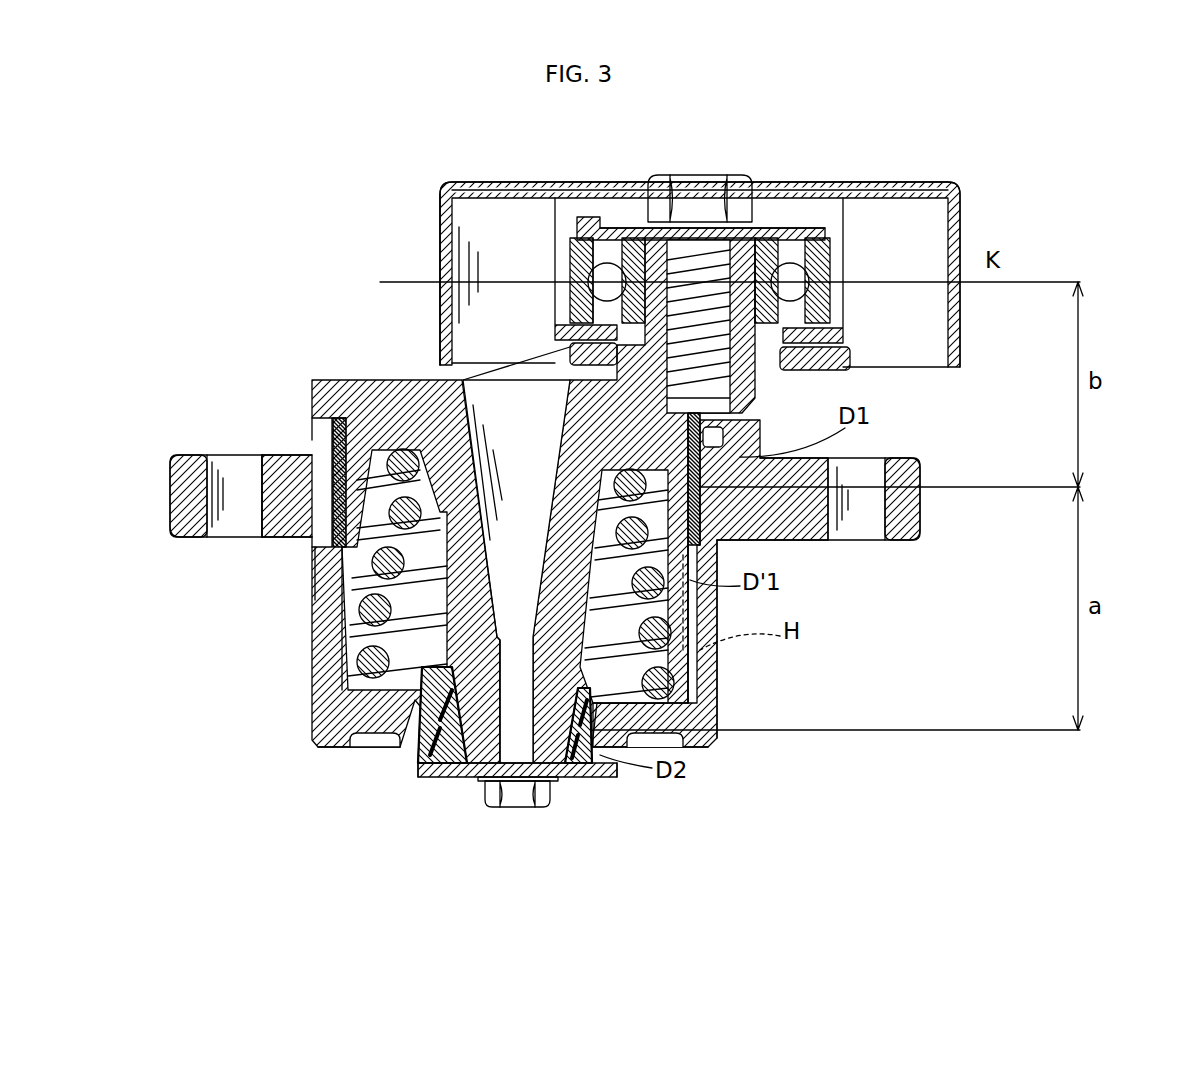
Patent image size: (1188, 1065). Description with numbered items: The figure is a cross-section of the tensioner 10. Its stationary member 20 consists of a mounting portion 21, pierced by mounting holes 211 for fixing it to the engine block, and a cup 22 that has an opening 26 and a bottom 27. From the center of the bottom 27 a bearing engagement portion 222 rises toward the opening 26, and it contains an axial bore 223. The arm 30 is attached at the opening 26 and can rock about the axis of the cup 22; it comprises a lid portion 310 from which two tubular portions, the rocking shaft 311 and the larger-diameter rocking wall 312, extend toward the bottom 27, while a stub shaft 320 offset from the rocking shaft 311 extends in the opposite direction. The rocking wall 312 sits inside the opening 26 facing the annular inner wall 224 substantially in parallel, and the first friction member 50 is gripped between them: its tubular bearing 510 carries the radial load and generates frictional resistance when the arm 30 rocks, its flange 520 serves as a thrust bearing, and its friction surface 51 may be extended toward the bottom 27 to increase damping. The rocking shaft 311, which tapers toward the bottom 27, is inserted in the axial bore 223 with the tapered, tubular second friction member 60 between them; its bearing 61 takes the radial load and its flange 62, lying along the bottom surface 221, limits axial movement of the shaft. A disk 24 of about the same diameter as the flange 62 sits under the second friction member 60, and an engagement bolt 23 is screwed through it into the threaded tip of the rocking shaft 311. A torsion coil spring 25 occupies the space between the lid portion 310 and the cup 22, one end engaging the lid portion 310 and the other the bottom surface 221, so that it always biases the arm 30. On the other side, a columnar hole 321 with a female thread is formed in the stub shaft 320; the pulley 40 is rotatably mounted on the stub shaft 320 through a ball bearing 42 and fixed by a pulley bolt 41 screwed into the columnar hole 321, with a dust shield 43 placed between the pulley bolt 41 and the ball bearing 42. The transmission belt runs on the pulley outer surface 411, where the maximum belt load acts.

The tensioner 10 is at (262, 186).
The stationary member 20 is at (733, 660).
The mounting portion 21 is at (810, 557).
The mounting holes 211 is at (207, 520).
The cup 22 is at (722, 751).
The bottom surface 221 is at (340, 720).
The bearing engagement portion 222 is at (400, 690).
The axial bore 223 is at (440, 780).
The annular inner wall 224 is at (345, 565).
The engagement bolt 23 is at (508, 822).
The disk 24 is at (620, 772).
The torsion coil spring 25 is at (688, 628).
The opening 26 is at (725, 460).
The bottom 27 is at (655, 725).
The arm 30 is at (315, 378).
The lid portion 310 is at (410, 378).
The rocking shaft 311 is at (465, 382).
The rocking wall 312 is at (340, 418).
The stub shaft 320 is at (822, 362).
The columnar hole 321 is at (722, 290).
The pulley 40 is at (930, 178).
The pulley bolt 41 is at (700, 190).
The pulley outer surface 411 is at (442, 240).
The ball bearing 42 is at (840, 300).
The dust shield 43 is at (592, 223).
The first friction member 50 is at (322, 418).
The friction surface 51 is at (265, 470).
The bearing 510 is at (318, 540).
The flange 520 is at (330, 432).
The second friction member 60 is at (452, 748).
The bearing 61 is at (414, 745).
The flange 62 is at (432, 775).